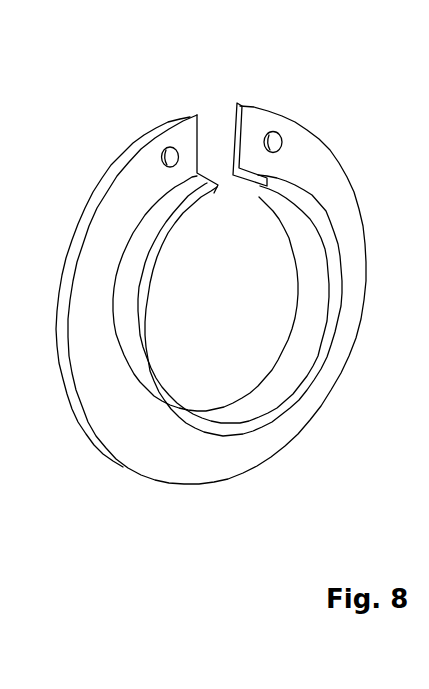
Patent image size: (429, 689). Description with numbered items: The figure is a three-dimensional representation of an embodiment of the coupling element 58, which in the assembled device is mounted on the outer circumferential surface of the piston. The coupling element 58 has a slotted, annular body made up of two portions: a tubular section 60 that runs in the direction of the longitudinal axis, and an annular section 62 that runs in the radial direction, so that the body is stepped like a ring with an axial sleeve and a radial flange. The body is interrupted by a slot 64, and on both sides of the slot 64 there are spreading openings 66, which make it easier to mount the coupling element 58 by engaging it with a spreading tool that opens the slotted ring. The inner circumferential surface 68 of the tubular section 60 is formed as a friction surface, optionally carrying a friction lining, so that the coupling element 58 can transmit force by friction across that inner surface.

The coupling element 58 is at (290, 94).
The tubular section 60 is at (332, 247).
The annular section 62 is at (140, 427).
The slot 64 is at (215, 160).
The spreading openings 66 is at (168, 147).
The inner circumferential surface 68 is at (283, 377).